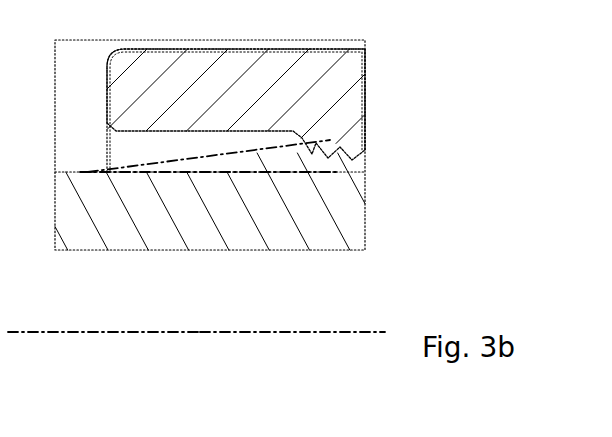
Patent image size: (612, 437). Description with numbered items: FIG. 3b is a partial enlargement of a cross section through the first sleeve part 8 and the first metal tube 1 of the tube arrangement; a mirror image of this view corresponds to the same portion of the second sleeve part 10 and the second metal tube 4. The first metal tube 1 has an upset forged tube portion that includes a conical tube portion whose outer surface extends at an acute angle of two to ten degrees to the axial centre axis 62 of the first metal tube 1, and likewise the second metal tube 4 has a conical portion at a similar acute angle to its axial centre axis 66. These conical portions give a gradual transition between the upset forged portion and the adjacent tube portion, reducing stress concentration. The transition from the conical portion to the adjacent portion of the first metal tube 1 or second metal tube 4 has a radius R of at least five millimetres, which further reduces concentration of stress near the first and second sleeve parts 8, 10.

The first metal tube 1 is at (332, 242).
The second metal tube 4 is at (348, 217).
The first sleeve part 8 is at (350, 66).
The second sleeve part 10 is at (355, 102).
The radius R is at (85, 162).
The axial centre axis 62 is at (185, 333).
The axial centre axis 66 is at (272, 333).